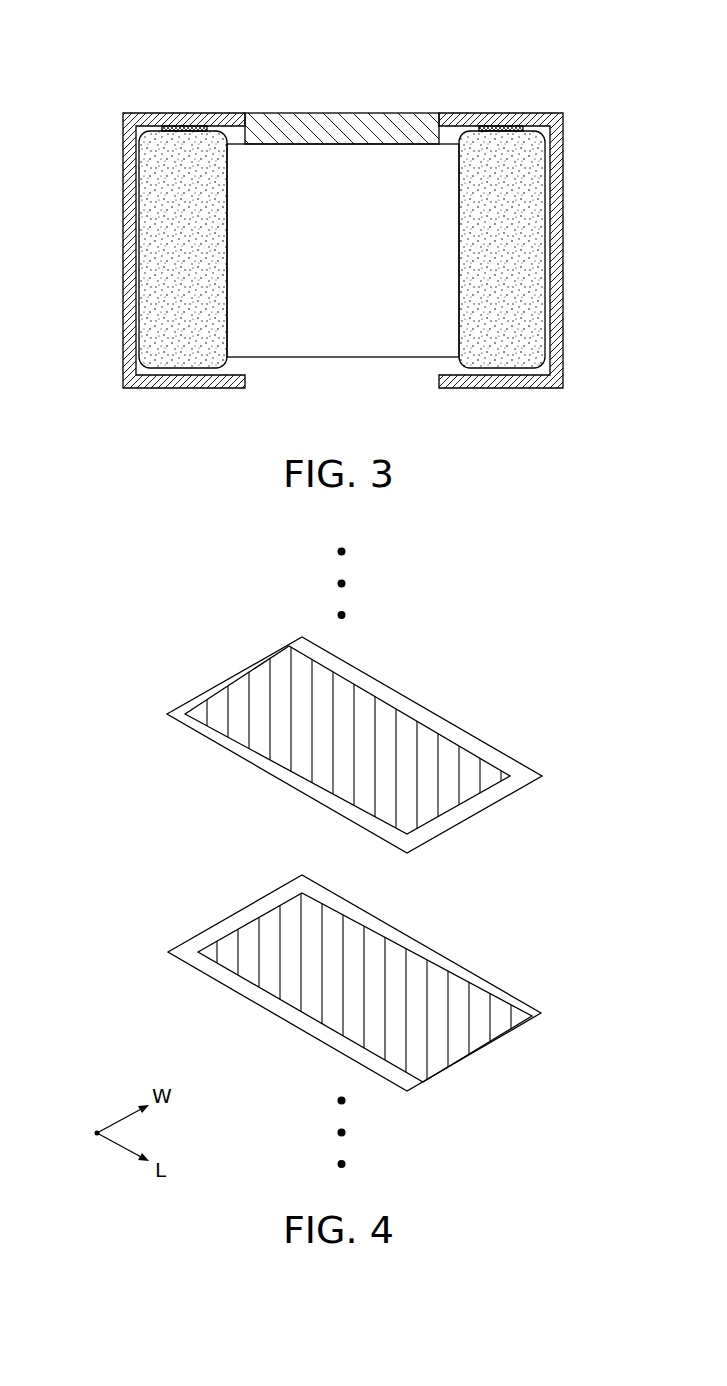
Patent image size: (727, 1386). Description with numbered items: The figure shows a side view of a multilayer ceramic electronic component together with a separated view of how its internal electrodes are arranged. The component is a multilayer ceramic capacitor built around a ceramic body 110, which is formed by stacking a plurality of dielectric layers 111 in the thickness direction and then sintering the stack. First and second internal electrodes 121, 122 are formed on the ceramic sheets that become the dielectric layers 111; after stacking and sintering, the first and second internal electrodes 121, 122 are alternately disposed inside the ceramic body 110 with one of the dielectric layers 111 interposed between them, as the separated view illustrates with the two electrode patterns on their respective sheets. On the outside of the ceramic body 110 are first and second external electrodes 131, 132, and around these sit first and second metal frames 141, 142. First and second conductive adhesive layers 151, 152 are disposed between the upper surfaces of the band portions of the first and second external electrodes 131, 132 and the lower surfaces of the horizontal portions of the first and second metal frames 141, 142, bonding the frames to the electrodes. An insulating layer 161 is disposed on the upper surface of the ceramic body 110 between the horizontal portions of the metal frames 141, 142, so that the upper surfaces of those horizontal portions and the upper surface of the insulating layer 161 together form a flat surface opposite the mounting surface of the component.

In FIG. 3, the ceramic body 110 is at (360, 345).
In FIG. 4, the dielectric layer 111 is at (452, 735).
In FIG. 4, the first internal electrode 121 is at (444, 793).
In FIG. 4, the second internal electrode 122 is at (270, 970).
In FIG. 3, the first external electrode 131 is at (132, 254).
In FIG. 3, the second external electrode 132 is at (553, 253).
In FIG. 3, the first metal frame 141 is at (114, 182).
In FIG. 3, the second metal frame 142 is at (572, 182).
In FIG. 3, the first conductive adhesive layer 151 is at (182, 125).
In FIG. 3, the second conductive adhesive layer 152 is at (498, 125).
In FIG. 3, the insulating layer 161 is at (338, 118).